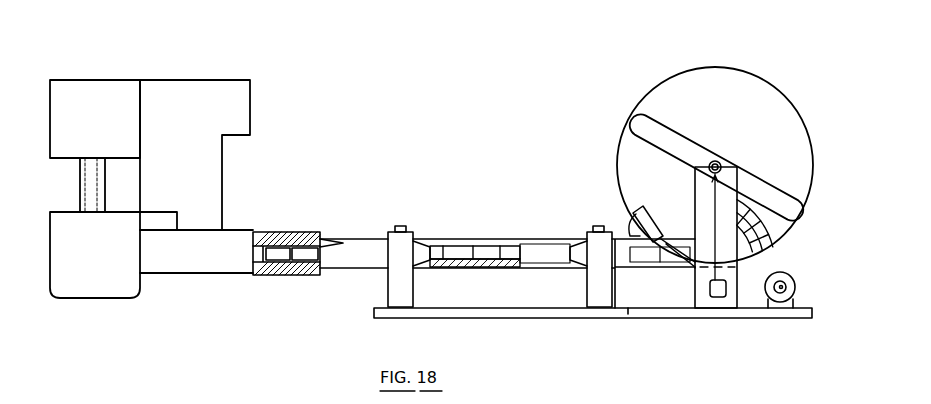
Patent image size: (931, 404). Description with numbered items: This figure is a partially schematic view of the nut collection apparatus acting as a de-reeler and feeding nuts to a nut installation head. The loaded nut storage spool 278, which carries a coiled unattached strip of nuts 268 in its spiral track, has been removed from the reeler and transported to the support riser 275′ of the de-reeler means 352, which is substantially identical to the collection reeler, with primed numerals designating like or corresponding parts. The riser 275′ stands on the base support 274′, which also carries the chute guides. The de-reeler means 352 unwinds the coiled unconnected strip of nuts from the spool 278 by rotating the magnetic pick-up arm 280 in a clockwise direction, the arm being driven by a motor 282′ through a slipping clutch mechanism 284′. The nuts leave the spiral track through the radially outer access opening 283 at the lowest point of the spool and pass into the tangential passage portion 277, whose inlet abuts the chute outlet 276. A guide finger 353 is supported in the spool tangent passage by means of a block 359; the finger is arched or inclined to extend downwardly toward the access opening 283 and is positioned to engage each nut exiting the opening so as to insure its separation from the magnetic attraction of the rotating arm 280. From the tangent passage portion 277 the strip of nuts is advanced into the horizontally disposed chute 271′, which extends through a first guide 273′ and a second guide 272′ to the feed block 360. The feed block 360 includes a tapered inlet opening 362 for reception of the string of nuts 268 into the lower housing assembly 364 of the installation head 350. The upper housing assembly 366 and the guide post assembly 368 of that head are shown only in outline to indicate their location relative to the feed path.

The drive assembly 350 is at (171, 47).
The upper housing assembly 366 is at (108, 126).
The guide post assembly 368 is at (83, 183).
The lower housing assembly 364 is at (108, 291).
The feed block 360 is at (295, 230).
The tapered inlet opening 362 is at (340, 241).
The second guide 272′ is at (403, 288).
The first guide 273′ is at (590, 288).
The horizontally disposed chute 271′ is at (450, 239).
The strip of nuts 268 is at (515, 253).
The tangential passage portion 277 is at (643, 268).
The block 359 is at (638, 212).
The outlet 276 is at (633, 235).
The guide finger 353 is at (665, 242).
The de-reeler means 352 is at (604, 95).
The nut storage spool 278 is at (797, 122).
The magnetic pick-up arm 280 is at (690, 132).
The support riser 275′ is at (743, 302).
The slipping clutch mechanism 284′ is at (718, 297).
The access opening 283 is at (681, 263).
The motor 282′ is at (726, 287).
The base support 274′ is at (797, 324).